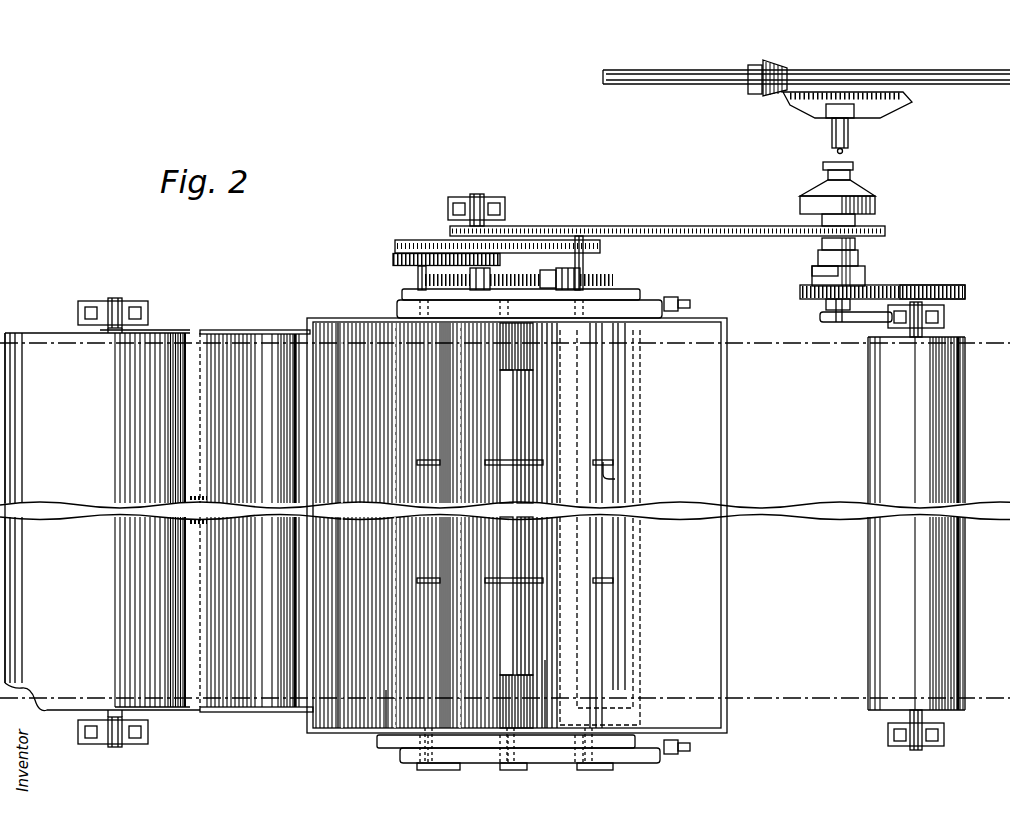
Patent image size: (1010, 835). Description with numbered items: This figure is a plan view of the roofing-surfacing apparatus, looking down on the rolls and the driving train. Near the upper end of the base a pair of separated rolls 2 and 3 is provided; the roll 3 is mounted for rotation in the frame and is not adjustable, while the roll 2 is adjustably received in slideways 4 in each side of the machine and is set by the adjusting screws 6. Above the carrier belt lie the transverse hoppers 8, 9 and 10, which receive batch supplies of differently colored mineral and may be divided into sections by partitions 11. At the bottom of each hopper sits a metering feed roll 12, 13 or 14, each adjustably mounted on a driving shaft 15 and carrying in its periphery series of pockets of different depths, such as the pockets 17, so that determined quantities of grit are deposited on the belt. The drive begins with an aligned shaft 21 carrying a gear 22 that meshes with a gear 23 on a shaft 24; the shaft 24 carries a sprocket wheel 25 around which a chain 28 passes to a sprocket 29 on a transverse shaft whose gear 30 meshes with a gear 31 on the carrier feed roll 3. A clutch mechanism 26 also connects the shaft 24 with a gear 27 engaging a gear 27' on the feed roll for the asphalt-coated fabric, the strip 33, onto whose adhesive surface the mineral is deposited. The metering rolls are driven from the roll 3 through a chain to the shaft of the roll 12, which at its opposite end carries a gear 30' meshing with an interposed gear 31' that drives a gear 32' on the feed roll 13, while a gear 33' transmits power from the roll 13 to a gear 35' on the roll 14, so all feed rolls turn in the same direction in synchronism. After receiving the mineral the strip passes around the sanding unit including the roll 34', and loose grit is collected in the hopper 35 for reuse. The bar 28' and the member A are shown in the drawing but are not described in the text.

The roll 2 is at (640, 440).
The roll 3 is at (385, 692).
The slideways 4 is at (650, 298).
The adjusting screws 6 is at (684, 302).
The hopper 8 is at (517, 525).
The hopper 9 is at (545, 690).
The hopper 10 is at (322, 345).
The partitions 11 is at (612, 478).
The feed roll 12 is at (622, 398).
The feed roll 13 is at (520, 352).
The feed roll 14 is at (420, 345).
The driving shaft 15 is at (577, 768).
The pockets 17 is at (520, 443).
The aligned shaft 21 is at (915, 72).
The gear 22 is at (758, 94).
The gear 23 is at (837, 102).
The shaft 24 is at (859, 136).
The sprocket wheel 25 is at (886, 233).
The clutch mechanism 26 is at (866, 280).
The gear 27 is at (865, 303).
The gear 27' is at (944, 283).
The chain 28 is at (667, 219).
The rack bar 28' is at (477, 247).
The sprocket 29 is at (452, 218).
The gear 30 is at (446, 237).
The gear 30' is at (612, 270).
The gear 31 is at (430, 267).
The interposed gear 31' is at (560, 272).
The gear 32' is at (517, 243).
The strip 33 is at (878, 526).
The gear 33' is at (479, 272).
The roll 34' is at (102, 522).
The hopper 35 is at (256, 504).
The gear 35' is at (399, 283).
The lower housing A is at (640, 762).